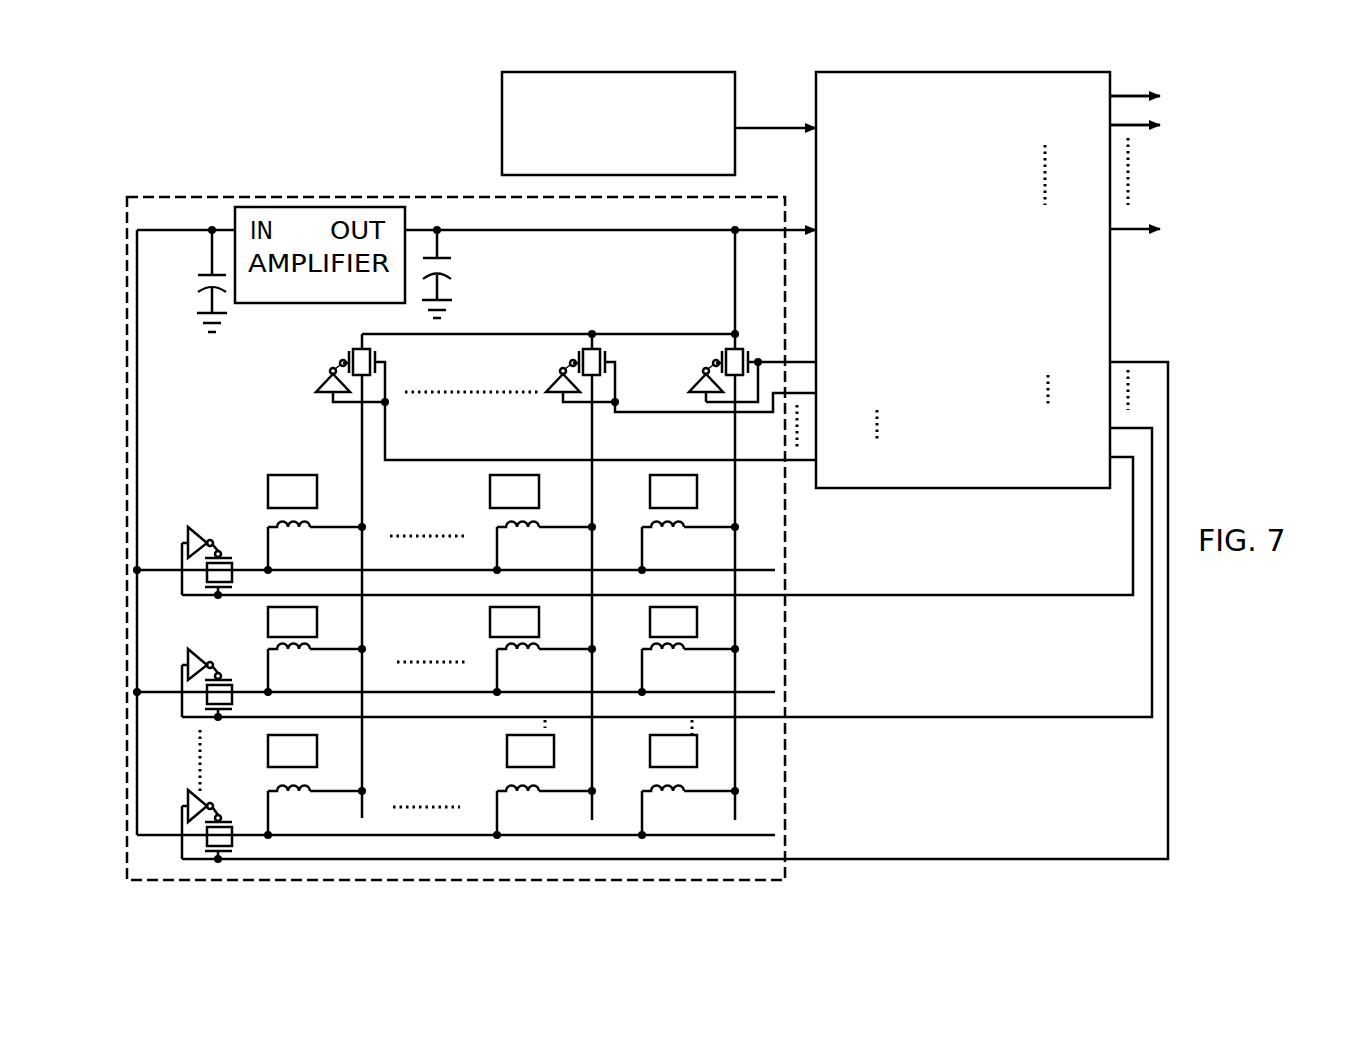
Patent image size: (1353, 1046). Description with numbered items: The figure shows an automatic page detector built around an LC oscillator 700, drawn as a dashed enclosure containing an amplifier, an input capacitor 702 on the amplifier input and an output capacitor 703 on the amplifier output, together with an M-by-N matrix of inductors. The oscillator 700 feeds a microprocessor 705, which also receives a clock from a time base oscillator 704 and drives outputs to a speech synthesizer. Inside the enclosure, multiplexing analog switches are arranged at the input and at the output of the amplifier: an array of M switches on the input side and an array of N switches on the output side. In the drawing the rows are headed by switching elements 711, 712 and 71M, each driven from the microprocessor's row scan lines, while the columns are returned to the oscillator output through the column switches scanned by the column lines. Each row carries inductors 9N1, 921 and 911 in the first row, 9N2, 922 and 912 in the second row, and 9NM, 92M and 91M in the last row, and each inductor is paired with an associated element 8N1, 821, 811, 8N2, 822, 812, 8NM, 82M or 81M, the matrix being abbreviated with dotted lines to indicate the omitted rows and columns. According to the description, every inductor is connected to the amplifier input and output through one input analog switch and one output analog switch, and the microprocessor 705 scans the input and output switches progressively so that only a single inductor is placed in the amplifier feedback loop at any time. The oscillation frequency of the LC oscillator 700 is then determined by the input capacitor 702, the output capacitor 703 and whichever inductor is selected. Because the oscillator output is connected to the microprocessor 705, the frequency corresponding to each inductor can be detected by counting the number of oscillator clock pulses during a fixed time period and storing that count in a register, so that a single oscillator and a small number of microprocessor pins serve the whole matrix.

The LC oscillator 700 is at (300, 192).
The input capacitor 702 is at (182, 287).
The output capacitor 703 is at (462, 275).
The time base oscillator 704 is at (543, 70).
The microprocessor 705 is at (1103, 67).
The row switching transistor 711 is at (220, 551).
The row switching transistor 712 is at (220, 674).
The row switching transistor 71M is at (220, 816).
The key 8N1 is at (317, 481).
The key 8N2 is at (317, 608).
The key 8NM is at (317, 737).
The key 811 is at (697, 481).
The key 812 is at (697, 612).
The key 81M is at (697, 737).
The key 821 is at (539, 481).
The key 822 is at (539, 612).
The key 82M is at (545, 735).
The inductor coil 9N1 is at (315, 552).
The inductor coil 9N2 is at (315, 674).
The inductor coil 9NM is at (315, 816).
The inductor coil 911 is at (688, 552).
The inductor coil 912 is at (688, 674).
The inductor coil 91M is at (688, 816).
The inductor coil 921 is at (544, 552).
The inductor coil 922 is at (544, 674).
The inductor coil 92M is at (544, 816).